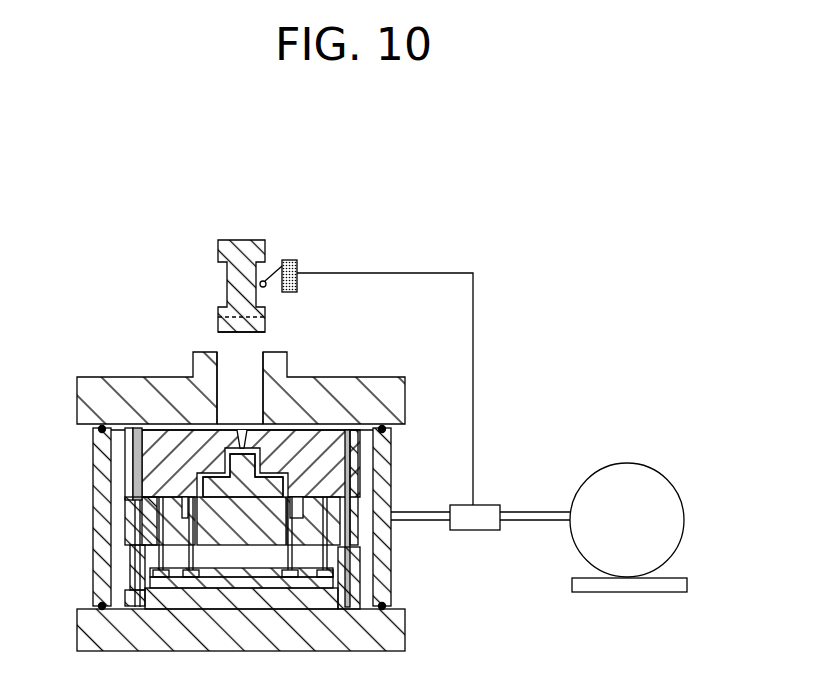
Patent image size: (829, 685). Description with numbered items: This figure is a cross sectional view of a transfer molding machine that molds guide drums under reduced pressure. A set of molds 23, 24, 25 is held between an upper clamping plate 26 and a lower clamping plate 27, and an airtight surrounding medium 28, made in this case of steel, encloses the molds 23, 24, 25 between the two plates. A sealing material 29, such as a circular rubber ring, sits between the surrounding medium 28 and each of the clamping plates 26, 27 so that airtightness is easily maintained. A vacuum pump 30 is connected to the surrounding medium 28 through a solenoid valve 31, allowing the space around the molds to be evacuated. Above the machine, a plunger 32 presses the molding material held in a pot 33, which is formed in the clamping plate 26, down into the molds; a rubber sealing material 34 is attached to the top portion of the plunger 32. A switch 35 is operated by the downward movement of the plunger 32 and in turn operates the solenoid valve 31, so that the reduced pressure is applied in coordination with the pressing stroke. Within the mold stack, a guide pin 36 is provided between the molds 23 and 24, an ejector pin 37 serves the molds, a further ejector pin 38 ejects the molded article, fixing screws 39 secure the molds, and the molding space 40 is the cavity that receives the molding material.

The mold 23 is at (130, 462).
The mold 24 is at (132, 522).
The mold 25 is at (130, 593).
The clamping plate 26 is at (398, 395).
The clamping plate 27 is at (406, 645).
The airtight surrounding medium 28 is at (387, 457).
The sealing material 29 is at (385, 428).
The vacuum pump 30 is at (630, 460).
The solenoid valve 31 is at (493, 505).
The plunger 32 is at (261, 240).
The pot 33 is at (232, 363).
The sealing material 34 is at (265, 317).
The switch 35 is at (297, 268).
The guide pin 36 is at (358, 478).
The ejector pin 37 is at (340, 528).
The ejector pin 38 is at (315, 558).
The fixing screws 39 is at (333, 575).
The molding space 40 is at (288, 460).